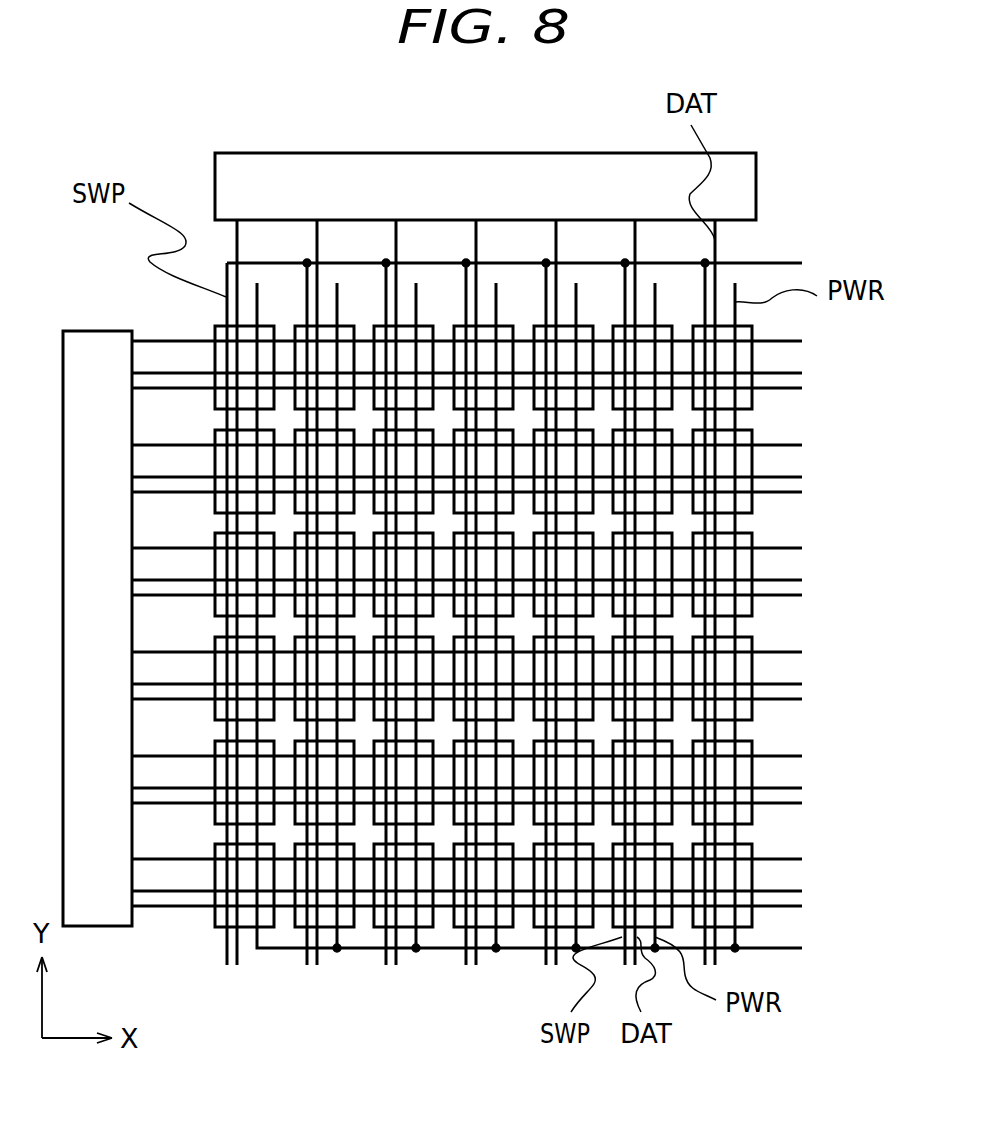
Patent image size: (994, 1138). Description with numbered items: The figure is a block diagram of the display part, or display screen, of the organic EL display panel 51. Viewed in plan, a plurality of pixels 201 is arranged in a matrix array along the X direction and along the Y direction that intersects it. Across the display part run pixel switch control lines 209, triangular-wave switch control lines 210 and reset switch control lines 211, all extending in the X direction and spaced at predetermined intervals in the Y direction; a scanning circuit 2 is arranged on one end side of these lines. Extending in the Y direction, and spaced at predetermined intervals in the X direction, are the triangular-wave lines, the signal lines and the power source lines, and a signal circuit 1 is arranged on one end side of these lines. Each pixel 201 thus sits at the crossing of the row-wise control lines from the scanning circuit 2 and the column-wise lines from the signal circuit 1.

The organic EL display panel 51 is at (504, 515).
The signal circuit 1 is at (595, 153).
The scanning circuit 2 is at (93, 340).
The pixel 201 is at (213, 920).
The pixel switch control line 209 is at (770, 445).
The triangular-wave switch control line 210 is at (778, 477).
The reset switch control line 211 is at (768, 492).